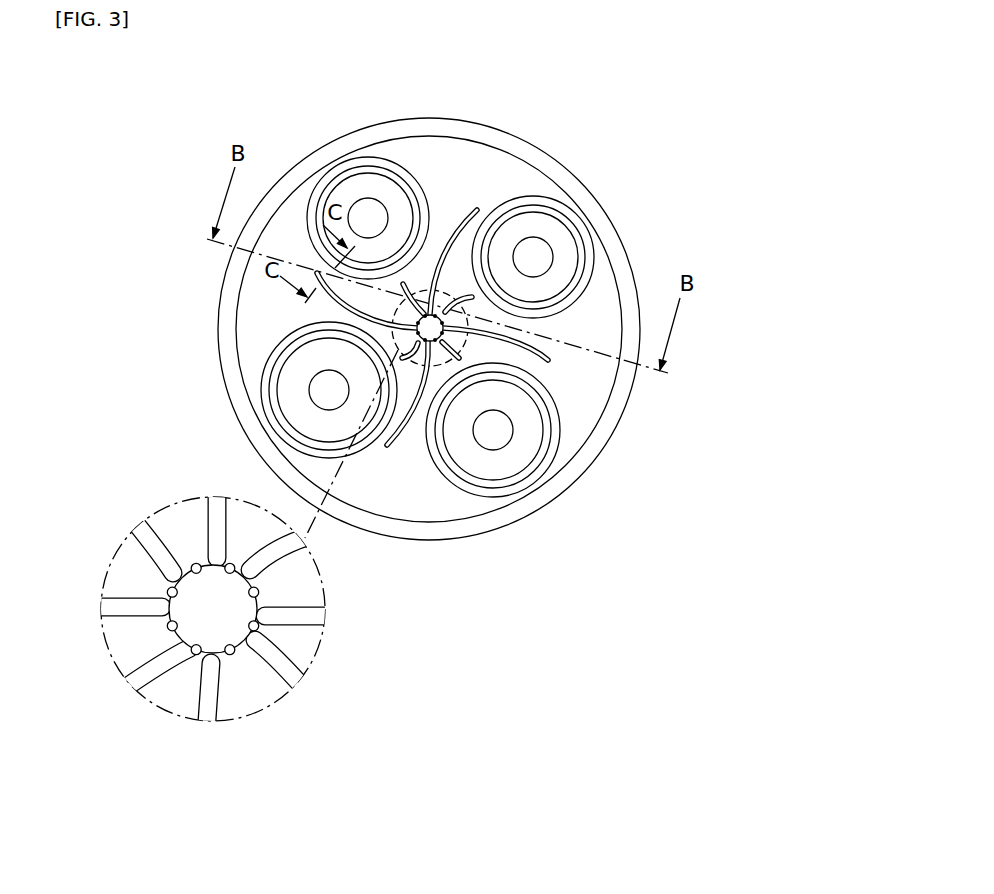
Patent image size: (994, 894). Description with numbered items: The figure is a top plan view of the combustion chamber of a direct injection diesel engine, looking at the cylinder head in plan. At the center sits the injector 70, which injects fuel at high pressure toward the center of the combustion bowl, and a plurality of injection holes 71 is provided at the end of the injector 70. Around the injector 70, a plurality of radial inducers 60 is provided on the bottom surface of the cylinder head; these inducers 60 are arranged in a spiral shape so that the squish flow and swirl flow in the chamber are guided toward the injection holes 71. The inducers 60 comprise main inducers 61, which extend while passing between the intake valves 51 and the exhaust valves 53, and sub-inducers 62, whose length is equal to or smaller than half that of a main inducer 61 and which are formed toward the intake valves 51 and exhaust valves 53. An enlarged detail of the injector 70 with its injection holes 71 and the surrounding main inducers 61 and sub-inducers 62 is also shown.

The intake valve 51 is at (568, 268).
The exhaust valve 53 is at (525, 457).
The inducer 60 is at (364, 420).
The main inducer 61 is at (458, 207).
The sub-inducer 62 is at (468, 298).
The injector 70 is at (210, 622).
The injection hole 71 is at (237, 652).